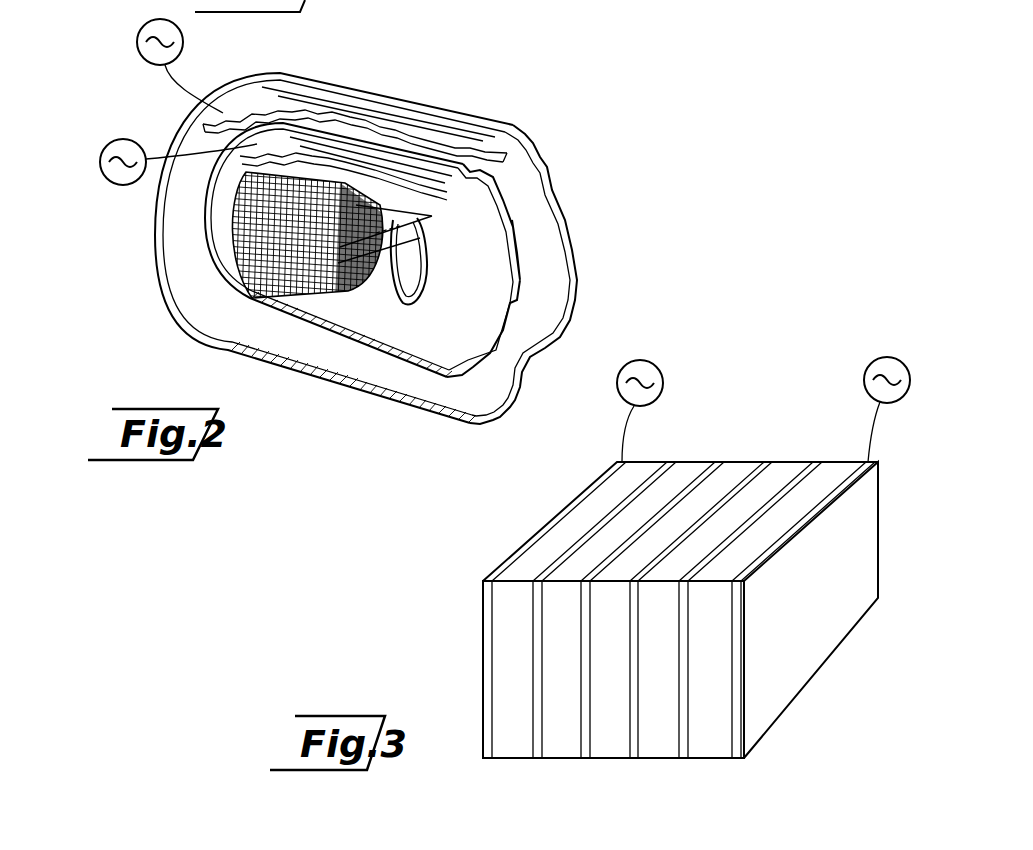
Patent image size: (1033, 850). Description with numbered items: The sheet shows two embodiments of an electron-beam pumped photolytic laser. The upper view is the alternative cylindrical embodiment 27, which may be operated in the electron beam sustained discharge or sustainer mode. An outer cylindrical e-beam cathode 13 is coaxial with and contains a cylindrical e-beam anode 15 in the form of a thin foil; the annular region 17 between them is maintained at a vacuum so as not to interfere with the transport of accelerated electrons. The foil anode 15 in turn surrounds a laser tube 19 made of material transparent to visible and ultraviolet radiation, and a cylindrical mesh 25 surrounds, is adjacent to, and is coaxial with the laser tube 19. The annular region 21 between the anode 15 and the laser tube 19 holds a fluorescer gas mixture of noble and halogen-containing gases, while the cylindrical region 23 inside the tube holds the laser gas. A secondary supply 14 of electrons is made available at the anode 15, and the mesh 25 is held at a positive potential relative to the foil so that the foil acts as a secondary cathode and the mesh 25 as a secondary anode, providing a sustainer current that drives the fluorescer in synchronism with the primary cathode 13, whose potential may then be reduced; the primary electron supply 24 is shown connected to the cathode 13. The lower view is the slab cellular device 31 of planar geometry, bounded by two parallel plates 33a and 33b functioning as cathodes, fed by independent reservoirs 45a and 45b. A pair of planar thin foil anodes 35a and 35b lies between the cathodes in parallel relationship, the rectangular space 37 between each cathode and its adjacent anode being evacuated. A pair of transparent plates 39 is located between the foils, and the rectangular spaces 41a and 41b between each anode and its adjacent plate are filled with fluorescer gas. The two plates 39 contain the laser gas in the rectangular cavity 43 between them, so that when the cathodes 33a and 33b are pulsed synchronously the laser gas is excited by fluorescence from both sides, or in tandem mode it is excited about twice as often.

In FIG. 2, the outer cylindrical e-beam cathode 13 is at (157, 230).
In FIG. 2, the secondary supply of electrons 14 is at (111, 143).
In FIG. 2, the cylindrical e-beam anode 15 is at (203, 252).
In FIG. 2, the annular region 17 is at (190, 219).
In FIG. 2, the laser tube 19 is at (417, 298).
In FIG. 2, the annular region 21 is at (225, 219).
In FIG. 2, the cylindrical region 23 is at (410, 275).
In FIG. 2, the AC source 24 is at (137, 45).
In FIG. 2, the cylindrical mesh 25 is at (236, 222).
In FIG. 2, the alternative embodiment 27 is at (540, 104).
In FIG. 3, the slab cellular device 31 is at (558, 498).
In FIG. 3, the parallel plate cathode 33a is at (487, 758).
In FIG. 3, the parallel plate cathode 33b is at (740, 758).
In FIG. 3, the planar thin foil anode 35a is at (537, 758).
In FIG. 3, the planar thin foil anode 35b is at (683, 758).
In FIG. 3, the rectangular space 37 is at (648, 462).
In FIG. 3, the transparent plate 39 is at (585, 758).
In FIG. 3, the rectangular space 41a is at (690, 462).
In FIG. 3, the rectangular space 41b is at (795, 462).
In FIG. 3, the rectangular cavity 43 is at (740, 462).
In FIG. 3, the independent reservoir 45a is at (657, 367).
In FIG. 3, the independent reservoir 45b is at (875, 360).